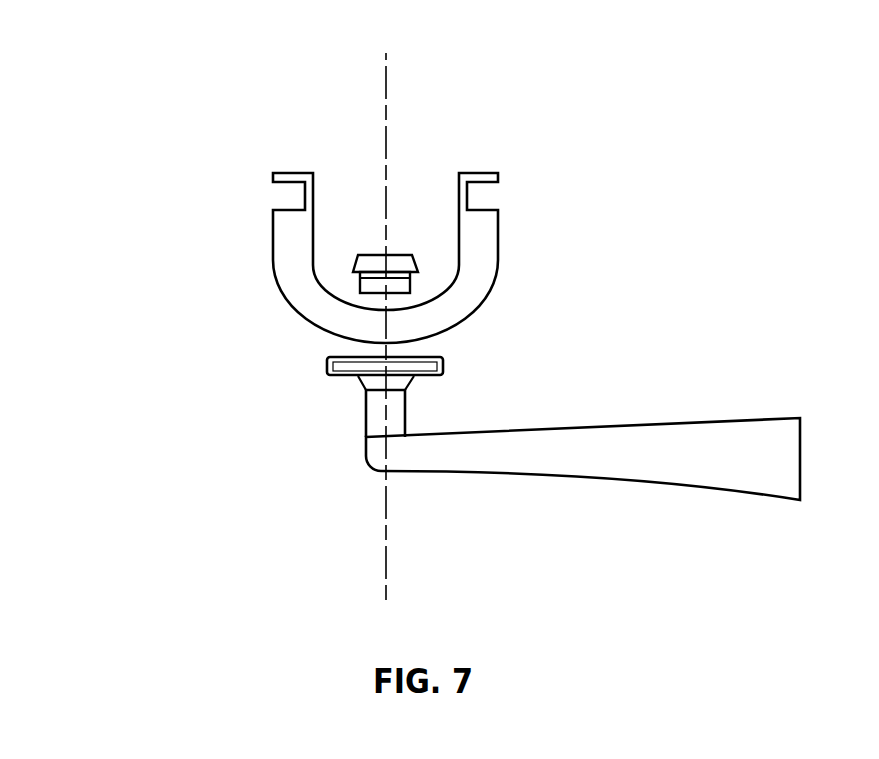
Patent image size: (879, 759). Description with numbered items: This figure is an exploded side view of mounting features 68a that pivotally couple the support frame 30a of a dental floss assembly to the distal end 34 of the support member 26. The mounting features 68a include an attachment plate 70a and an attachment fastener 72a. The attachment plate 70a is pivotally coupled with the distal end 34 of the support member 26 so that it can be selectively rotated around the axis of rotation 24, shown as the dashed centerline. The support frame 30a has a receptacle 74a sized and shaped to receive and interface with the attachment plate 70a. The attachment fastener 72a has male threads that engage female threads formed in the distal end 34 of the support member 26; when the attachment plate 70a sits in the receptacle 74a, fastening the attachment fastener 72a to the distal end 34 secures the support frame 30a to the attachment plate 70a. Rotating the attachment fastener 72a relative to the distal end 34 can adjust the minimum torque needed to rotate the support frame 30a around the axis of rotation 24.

The axis of rotation 24 is at (386, 519).
The support member 26 is at (645, 482).
The support frame 30a is at (335, 192).
The distal end 34 is at (319, 476).
The mounting features 68a is at (376, 391).
The attachment plate 70a is at (442, 365).
The attachment fastener 72a is at (372, 256).
The receptacle 74a is at (450, 338).